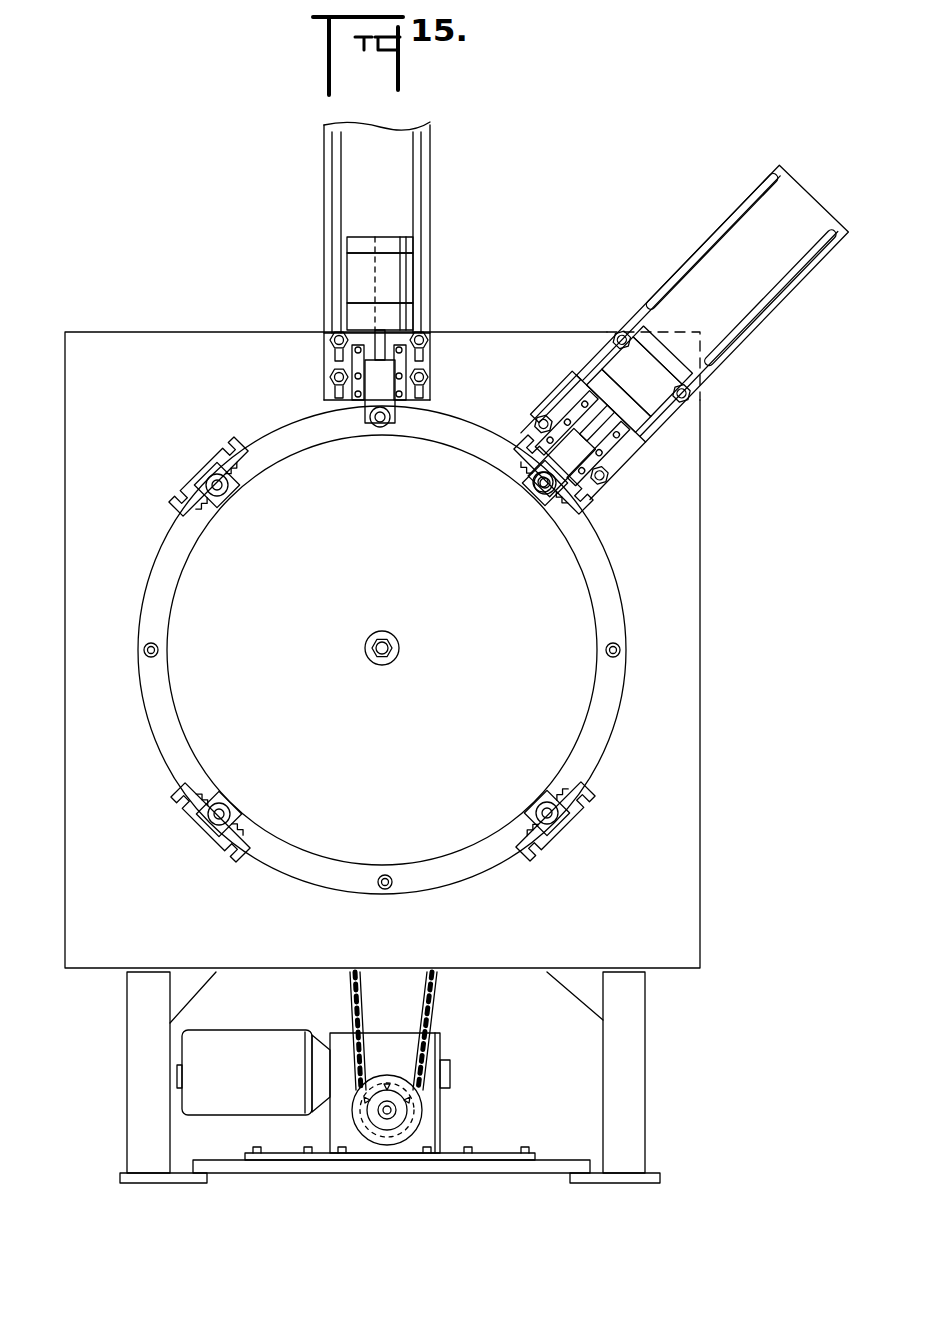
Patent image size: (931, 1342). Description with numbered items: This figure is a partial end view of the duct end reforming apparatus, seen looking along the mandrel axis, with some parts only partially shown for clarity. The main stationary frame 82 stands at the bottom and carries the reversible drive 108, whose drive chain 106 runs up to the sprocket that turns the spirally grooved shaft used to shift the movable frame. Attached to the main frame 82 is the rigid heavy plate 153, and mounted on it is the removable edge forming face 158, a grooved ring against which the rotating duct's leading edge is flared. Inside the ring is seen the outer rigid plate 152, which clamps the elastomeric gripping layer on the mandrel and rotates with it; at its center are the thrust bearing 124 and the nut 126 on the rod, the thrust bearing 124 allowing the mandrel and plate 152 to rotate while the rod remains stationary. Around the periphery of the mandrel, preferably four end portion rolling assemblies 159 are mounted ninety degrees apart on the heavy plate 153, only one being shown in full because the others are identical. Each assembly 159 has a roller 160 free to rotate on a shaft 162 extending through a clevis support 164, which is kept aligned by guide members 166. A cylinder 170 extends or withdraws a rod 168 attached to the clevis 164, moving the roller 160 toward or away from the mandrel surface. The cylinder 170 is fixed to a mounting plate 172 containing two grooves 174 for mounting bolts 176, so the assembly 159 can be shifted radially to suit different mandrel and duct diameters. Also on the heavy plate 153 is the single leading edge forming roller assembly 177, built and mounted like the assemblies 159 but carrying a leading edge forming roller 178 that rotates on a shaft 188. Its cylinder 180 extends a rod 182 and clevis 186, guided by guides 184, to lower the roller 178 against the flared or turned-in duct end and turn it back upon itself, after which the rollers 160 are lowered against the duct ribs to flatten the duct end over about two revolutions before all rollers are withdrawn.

The main stationary frame 82 is at (628, 1055).
The drive chain 106 is at (432, 992).
The reversible drive 108 is at (430, 1095).
The thrust bearing 124 is at (366, 648).
The nut 126 is at (400, 648).
The outer rigid plate 152 is at (382, 650).
The rigid heavy plate 153 is at (668, 830).
The removable edge forming face 158 is at (612, 700).
The end portion rolling assembly 159 is at (167, 382).
The roller 160 is at (232, 492).
The shaft 162 is at (572, 497).
The clevis support 164 is at (550, 465).
The guide members 166 is at (610, 468).
The rod 168 is at (615, 435).
The cylinder 170 is at (624, 378).
The mounting plate 172 is at (684, 332).
The grooves 174 is at (745, 215).
The mounting bolts 176 is at (690, 396).
The leading edge forming roller assembly 177 is at (430, 261).
The leading edge forming roller 178 is at (376, 421).
The cylinder 180 is at (380, 298).
The rod 182 is at (454, 340).
The guides 184 is at (303, 332).
The clevis 186 is at (335, 347).
The shaft 188 is at (428, 401).